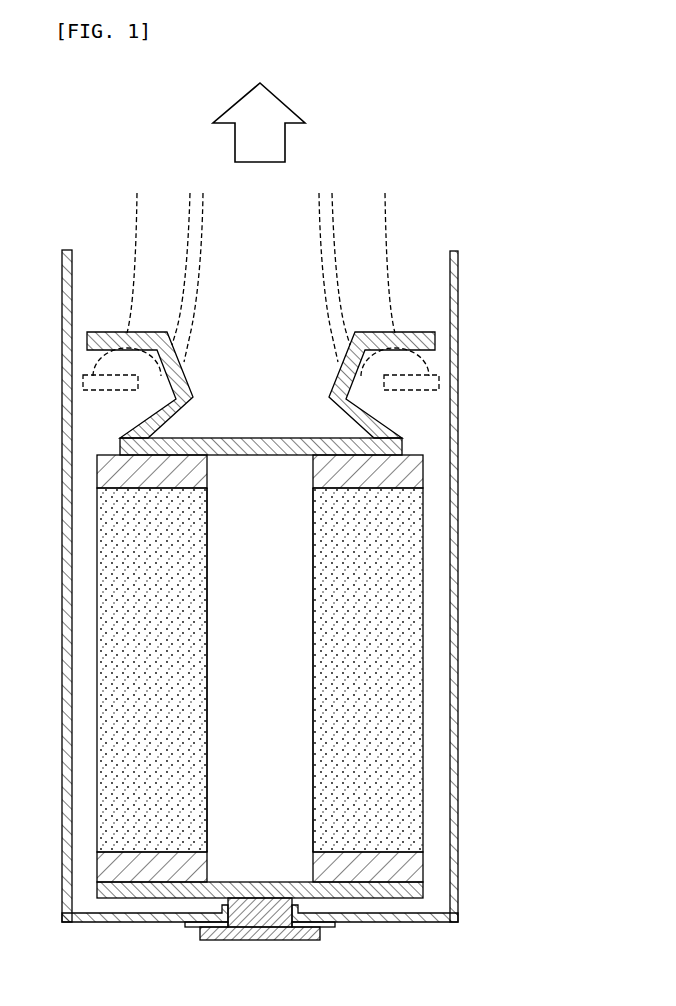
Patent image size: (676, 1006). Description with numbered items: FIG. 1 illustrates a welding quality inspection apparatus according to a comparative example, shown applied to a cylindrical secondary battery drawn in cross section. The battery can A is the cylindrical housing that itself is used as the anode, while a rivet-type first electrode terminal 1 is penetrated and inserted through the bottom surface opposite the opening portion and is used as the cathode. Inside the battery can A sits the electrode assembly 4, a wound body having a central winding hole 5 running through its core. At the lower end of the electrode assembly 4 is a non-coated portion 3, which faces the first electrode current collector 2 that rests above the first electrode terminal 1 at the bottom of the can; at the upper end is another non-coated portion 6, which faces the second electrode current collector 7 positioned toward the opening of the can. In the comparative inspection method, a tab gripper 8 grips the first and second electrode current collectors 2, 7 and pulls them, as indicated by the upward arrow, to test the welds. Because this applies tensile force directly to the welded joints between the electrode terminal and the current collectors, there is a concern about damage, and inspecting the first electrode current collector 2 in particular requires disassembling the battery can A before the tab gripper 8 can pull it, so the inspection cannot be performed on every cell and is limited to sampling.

The first electrode terminal 1 is at (320, 937).
The first electrode current collector 2 is at (413, 890).
The non-coated portion 3 is at (397, 865).
The electrode assembly 4 is at (398, 673).
The winding hole 5 is at (265, 566).
The non-coated portion 6 is at (403, 472).
The second electrode current collector 7 is at (390, 436).
The tab gripper 8 is at (387, 252).
The battery can A is at (458, 300).